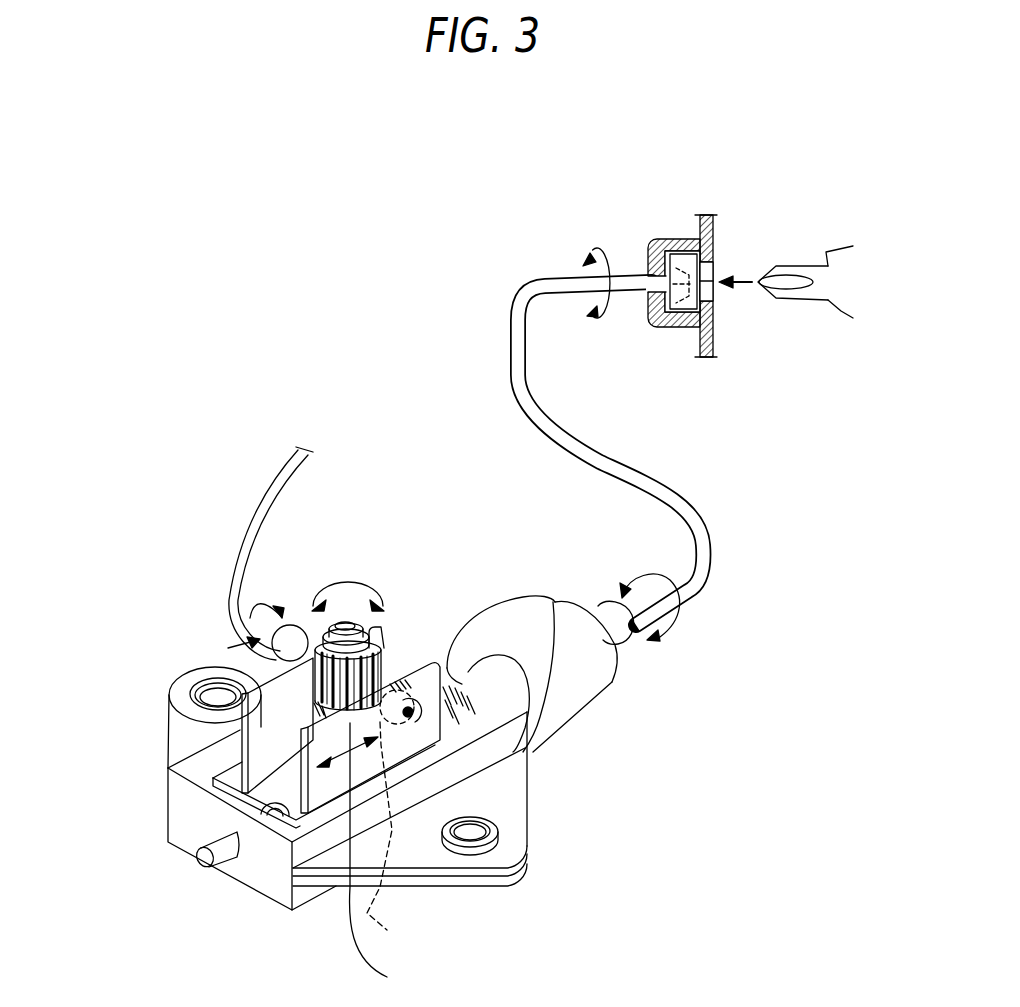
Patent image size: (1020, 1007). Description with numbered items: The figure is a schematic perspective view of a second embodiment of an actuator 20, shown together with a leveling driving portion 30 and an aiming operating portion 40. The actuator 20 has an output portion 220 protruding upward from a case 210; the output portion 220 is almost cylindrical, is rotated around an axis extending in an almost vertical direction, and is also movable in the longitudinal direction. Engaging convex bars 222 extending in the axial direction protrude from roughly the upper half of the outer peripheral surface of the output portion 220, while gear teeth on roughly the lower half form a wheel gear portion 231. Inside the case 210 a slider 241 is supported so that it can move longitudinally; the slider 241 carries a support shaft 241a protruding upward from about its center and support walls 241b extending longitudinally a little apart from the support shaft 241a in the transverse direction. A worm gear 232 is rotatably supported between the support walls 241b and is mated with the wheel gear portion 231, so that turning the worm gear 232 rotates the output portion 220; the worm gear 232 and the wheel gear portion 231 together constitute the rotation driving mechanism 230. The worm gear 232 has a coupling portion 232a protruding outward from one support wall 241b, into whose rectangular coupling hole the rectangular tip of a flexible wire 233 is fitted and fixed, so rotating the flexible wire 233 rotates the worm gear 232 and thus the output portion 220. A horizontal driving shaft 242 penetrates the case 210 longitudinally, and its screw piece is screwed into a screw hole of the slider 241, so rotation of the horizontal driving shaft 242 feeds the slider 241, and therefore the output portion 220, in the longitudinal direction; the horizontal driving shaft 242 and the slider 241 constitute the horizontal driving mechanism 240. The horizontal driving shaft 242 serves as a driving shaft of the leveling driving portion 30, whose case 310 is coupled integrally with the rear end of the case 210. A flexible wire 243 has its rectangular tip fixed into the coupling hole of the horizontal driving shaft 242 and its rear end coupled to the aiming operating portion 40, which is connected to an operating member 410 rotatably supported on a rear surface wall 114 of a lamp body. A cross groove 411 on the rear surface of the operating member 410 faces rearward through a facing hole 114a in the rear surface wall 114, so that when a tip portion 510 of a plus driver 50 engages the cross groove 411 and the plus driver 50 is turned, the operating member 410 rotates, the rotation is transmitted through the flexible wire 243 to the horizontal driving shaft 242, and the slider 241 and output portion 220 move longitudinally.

The actuator 20 is at (228, 892).
The case 210 is at (177, 832).
The output portion 220 is at (360, 645).
The engaging convex bar 222 is at (228, 658).
The rotation driving mechanism 230 is at (433, 913).
The wheel gear portion 231 is at (389, 854).
The worm gear 232 is at (398, 815).
The coupling portion 232a is at (293, 625).
The flexible wire 233 is at (278, 488).
The horizontal driving mechanism 240 is at (650, 785).
The slider 241 is at (523, 803).
The support shaft 241a is at (352, 620).
The support wall 241b is at (168, 690).
The horizontal driving shaft 242 is at (520, 760).
The flexible wire 243 is at (709, 542).
The leveling driving portion 30 is at (575, 693).
The case 310 is at (578, 665).
The aiming operating portion 40 is at (705, 255).
The operating member 410 is at (675, 239).
The cross groove 411 is at (667, 329).
The rear surface wall 114 is at (714, 337).
The facing hole 114a is at (714, 263).
The plus driver 50 is at (810, 270).
The tip portion 510 is at (767, 293).